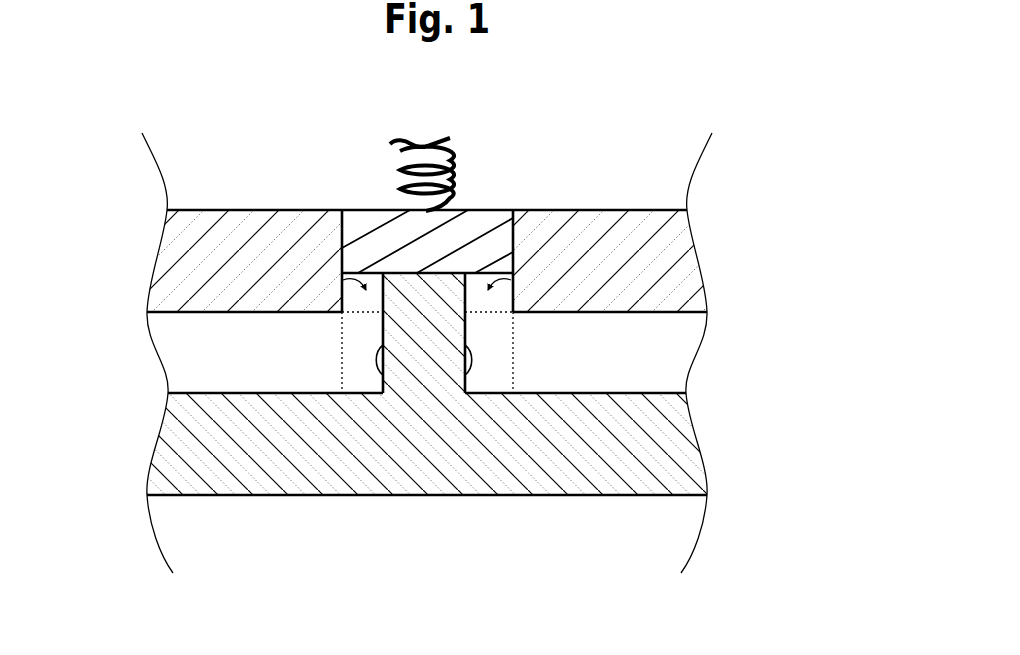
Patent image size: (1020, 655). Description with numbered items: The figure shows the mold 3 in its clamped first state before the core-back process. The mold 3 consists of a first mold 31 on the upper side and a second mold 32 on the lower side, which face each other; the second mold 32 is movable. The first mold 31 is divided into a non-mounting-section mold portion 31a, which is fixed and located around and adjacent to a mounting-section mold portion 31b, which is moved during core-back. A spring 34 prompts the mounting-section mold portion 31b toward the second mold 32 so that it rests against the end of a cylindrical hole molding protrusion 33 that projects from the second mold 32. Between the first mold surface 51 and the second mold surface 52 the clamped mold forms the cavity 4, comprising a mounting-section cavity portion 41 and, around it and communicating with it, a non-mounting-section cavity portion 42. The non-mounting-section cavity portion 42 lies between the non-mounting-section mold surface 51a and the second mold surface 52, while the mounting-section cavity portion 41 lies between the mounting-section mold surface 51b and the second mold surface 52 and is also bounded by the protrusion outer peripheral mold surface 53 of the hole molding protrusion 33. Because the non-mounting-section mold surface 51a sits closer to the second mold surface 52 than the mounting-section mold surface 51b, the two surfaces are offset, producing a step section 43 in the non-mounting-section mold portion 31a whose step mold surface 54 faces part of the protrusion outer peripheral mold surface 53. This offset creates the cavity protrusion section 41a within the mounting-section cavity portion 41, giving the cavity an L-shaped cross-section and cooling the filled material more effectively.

The mold 3 is at (621, 112).
The first mold 31 is at (235, 172).
The non-mounting-section mold portion 31a is at (287, 211).
The mounting-section mold portion 31b is at (348, 215).
The second mold 32 is at (160, 457).
The hole molding protrusion 33 is at (423, 350).
The spring 34 is at (425, 152).
The cavity 4 is at (282, 596).
The mounting-section cavity portion 41 is at (365, 378).
The cavity protrusion section 41a is at (368, 306).
The non-mounting-section cavity portion 42 is at (237, 372).
The step section 43 is at (343, 343).
The first mold surface 51 is at (770, 228).
The non-mounting-section mold surface 51a is at (213, 315).
The mounting-section mold surface 51b is at (343, 300).
The second mold surface 52 is at (207, 391).
The protrusion outer peripheral mold surface 53 is at (382, 360).
The step mold surface 54 is at (347, 326).